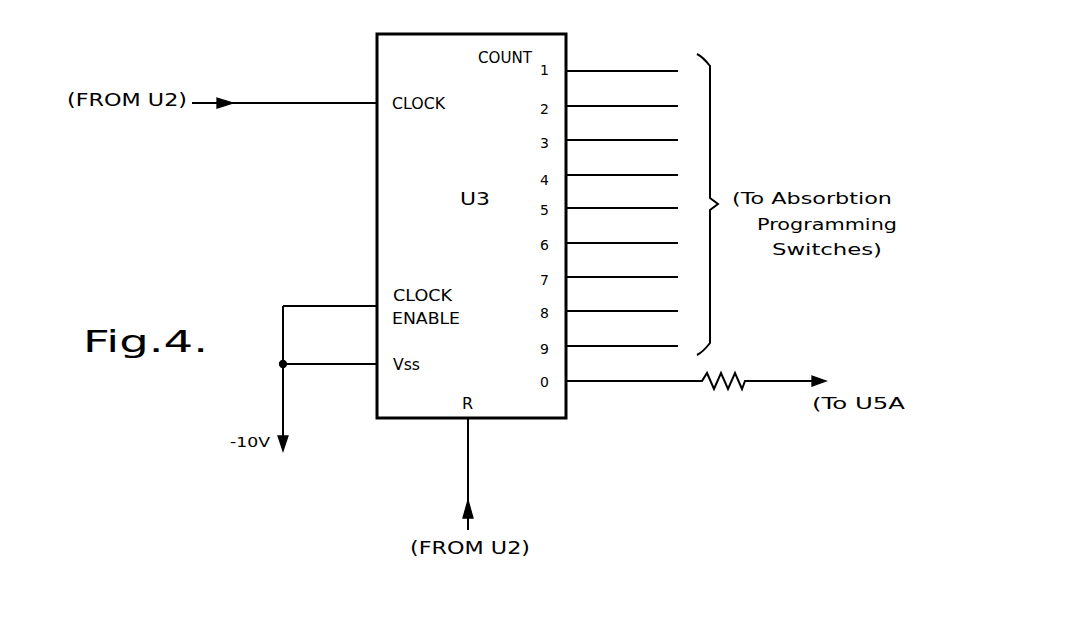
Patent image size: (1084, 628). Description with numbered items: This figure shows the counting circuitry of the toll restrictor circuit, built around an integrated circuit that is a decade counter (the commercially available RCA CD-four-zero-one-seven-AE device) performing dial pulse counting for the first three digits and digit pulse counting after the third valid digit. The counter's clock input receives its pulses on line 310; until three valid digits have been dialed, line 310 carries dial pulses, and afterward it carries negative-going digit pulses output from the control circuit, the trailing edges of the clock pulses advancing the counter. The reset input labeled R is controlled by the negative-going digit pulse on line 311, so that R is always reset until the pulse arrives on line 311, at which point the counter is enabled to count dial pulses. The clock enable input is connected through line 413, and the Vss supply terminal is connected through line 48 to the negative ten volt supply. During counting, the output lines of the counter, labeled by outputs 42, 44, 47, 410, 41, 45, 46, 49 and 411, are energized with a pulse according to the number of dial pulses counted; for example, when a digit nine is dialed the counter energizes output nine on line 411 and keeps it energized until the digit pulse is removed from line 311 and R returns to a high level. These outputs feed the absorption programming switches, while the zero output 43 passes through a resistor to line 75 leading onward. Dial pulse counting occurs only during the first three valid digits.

The clock input line 310 is at (300, 101).
The clock enable line 413 is at (325, 302).
The Vss supply line 48 is at (330, 361).
The digit pulse line 311 is at (466, 474).
The resistor output line to U5A 75 is at (798, 378).
The count 1 output line 42 is at (618, 62).
The count 2 output line 44 is at (618, 97).
The count 3 output line 47 is at (618, 131).
The count 4 output line 410 is at (625, 166).
The count 5 output line 41 is at (618, 200).
The count 6 output line 45 is at (618, 234).
The count 7 output line 46 is at (618, 268).
The count 8 output line 49 is at (618, 302).
The output 9 line 411 is at (623, 337).
The count 0 output line 43 is at (618, 372).